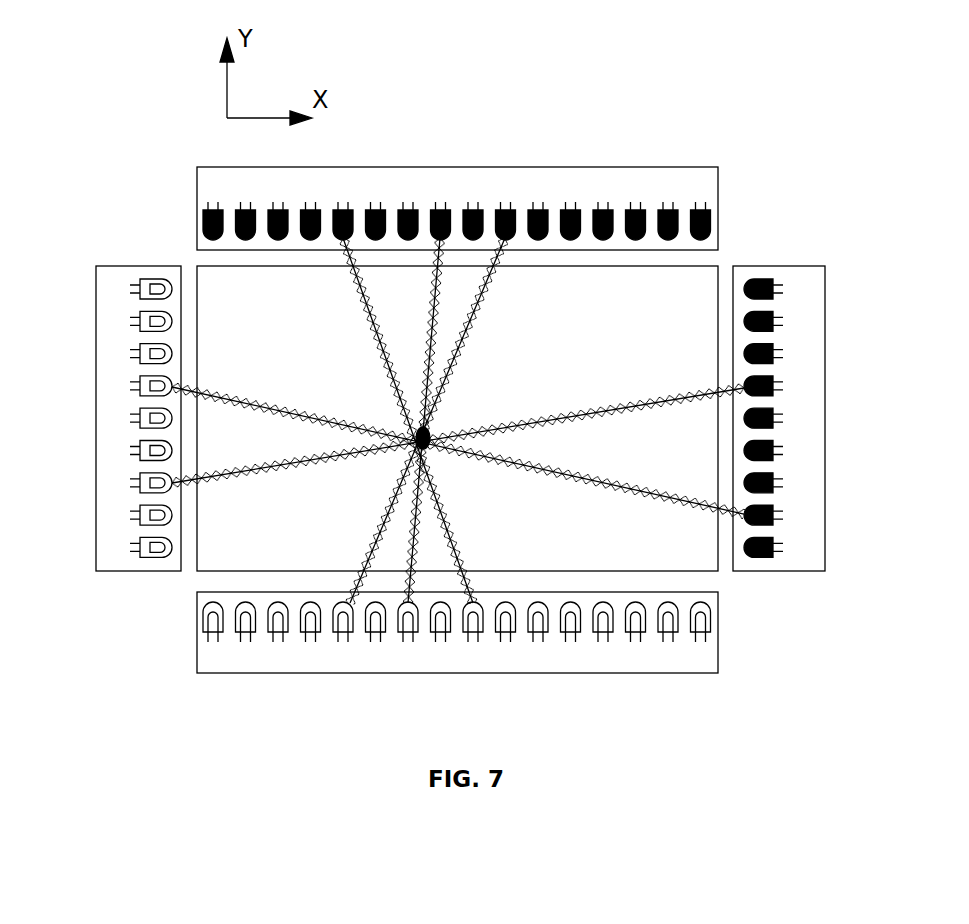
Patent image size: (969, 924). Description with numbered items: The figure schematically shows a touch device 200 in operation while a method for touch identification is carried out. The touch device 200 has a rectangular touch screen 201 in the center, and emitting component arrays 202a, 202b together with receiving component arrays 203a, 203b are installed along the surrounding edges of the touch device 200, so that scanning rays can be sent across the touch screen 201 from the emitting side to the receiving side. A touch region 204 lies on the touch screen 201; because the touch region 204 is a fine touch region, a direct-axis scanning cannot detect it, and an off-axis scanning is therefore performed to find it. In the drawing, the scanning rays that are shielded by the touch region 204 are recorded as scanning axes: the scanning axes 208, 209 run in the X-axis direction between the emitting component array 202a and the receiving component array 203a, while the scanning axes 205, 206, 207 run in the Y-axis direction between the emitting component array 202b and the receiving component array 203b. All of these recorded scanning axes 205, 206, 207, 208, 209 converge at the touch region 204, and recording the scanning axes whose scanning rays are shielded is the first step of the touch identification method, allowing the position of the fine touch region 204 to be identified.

The touch device 200 is at (172, 215).
The rectangular touch screen 201 is at (712, 300).
The emitting component array 202a is at (140, 282).
The emitting component array 202b is at (712, 618).
The receiving component array 203a is at (767, 280).
The receiving component array 203b is at (575, 210).
The touch region 204 is at (452, 461).
The scanning axis 205 is at (444, 420).
The scanning axis 206 is at (412, 421).
The scanning axis 207 is at (386, 420).
The scanning axis 208 is at (458, 420).
The scanning axis 209 is at (458, 450).